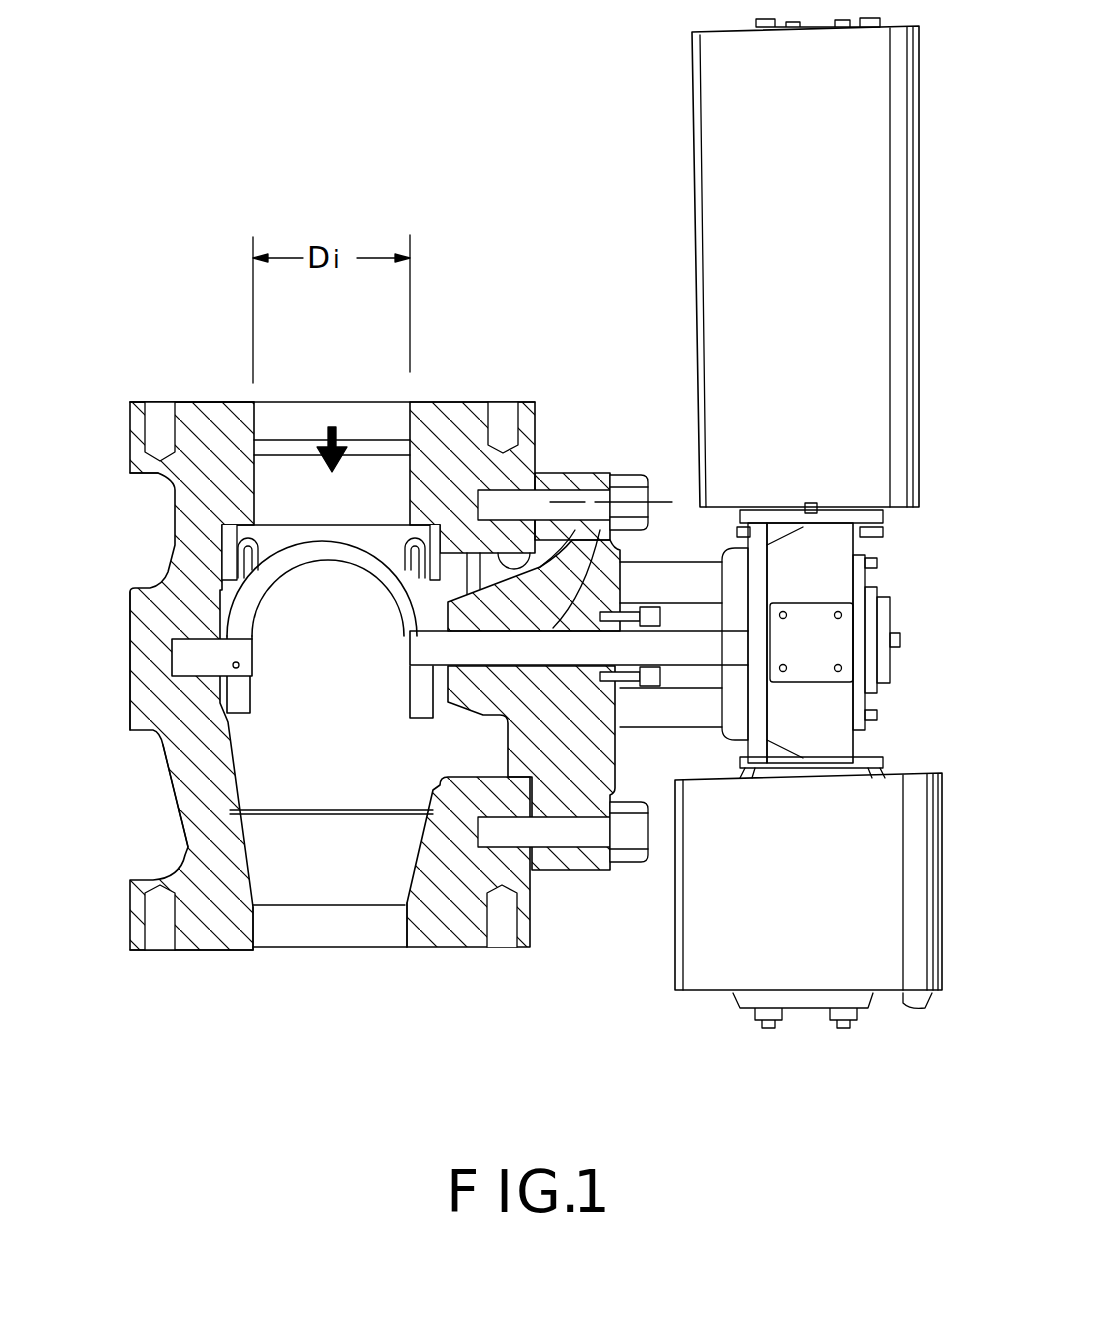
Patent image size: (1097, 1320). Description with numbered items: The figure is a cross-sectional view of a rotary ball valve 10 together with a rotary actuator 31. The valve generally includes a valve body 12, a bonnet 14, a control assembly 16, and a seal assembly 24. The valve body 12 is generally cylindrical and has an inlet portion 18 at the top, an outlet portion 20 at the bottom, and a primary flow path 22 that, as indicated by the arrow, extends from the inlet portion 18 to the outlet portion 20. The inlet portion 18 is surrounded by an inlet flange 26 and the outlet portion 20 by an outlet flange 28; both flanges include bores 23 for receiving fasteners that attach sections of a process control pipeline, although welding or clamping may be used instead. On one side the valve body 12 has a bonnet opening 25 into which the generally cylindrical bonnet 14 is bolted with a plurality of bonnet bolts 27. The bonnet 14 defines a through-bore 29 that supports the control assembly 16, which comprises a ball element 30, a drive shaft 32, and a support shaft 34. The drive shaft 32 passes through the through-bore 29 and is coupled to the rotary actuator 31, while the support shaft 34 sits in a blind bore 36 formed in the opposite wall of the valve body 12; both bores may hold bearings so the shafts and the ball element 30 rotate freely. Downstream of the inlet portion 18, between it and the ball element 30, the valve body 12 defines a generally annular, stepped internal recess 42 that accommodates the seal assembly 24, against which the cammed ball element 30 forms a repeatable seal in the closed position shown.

The rotary ball valve 10 is at (125, 357).
The valve body 12 is at (450, 402).
The bonnet 14 is at (618, 751).
The control assembly 16 is at (367, 732).
The inlet portion 18 is at (305, 375).
The outlet portion 20 is at (372, 978).
The primary flow path 22 is at (338, 402).
The bores 23 is at (512, 402).
The seal assembly 24 is at (205, 549).
The bonnet opening 25 is at (523, 607).
The inlet flange 26 is at (207, 402).
The bonnet bolts 27 is at (670, 498).
The outlet flange 28 is at (452, 918).
The through-bore 29 is at (620, 546).
The ball element 30 is at (243, 618).
The rotary actuator 31 is at (905, 340).
The drive shaft 32 is at (535, 653).
The support shaft 34 is at (200, 677).
The blind bore 36 is at (197, 637).
The internal recess 42 is at (437, 438).